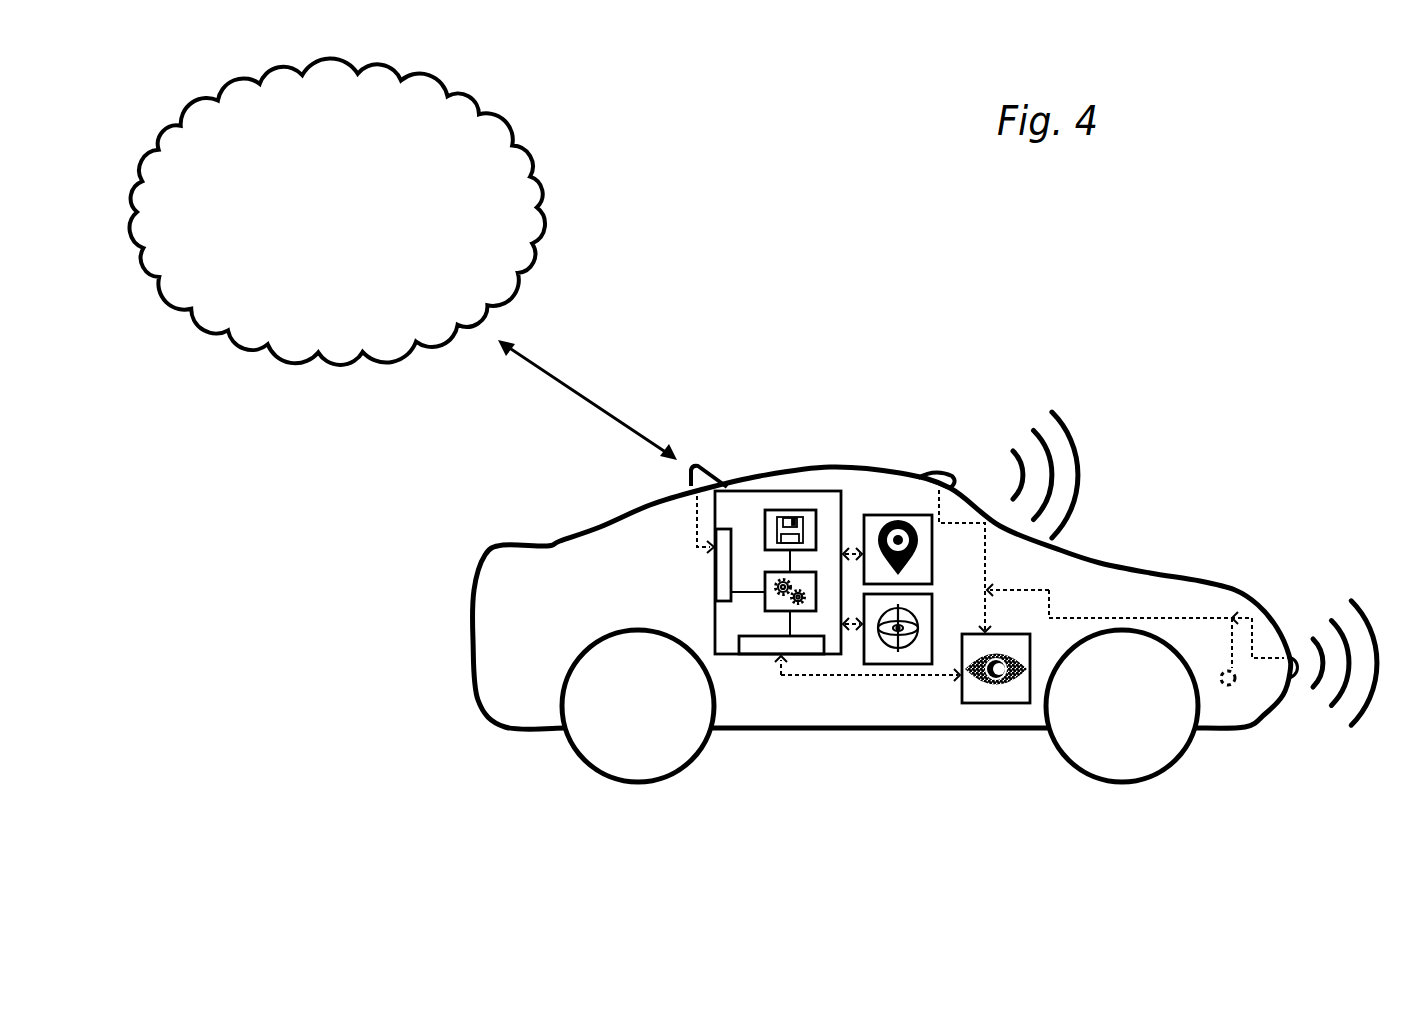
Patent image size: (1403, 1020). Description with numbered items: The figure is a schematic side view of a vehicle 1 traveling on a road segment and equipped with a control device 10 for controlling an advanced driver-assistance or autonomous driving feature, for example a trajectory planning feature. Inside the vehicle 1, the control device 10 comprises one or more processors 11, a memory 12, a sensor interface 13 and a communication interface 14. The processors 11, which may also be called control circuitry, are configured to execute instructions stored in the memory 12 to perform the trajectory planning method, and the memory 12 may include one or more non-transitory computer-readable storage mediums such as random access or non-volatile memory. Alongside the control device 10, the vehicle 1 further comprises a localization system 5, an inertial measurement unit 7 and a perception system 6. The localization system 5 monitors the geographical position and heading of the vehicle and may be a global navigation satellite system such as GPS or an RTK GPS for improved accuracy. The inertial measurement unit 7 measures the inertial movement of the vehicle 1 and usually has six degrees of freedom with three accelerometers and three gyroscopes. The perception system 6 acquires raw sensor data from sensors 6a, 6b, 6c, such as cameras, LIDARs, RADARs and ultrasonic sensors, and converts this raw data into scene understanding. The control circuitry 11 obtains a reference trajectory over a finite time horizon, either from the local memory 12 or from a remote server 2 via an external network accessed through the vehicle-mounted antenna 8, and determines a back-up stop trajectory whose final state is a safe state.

The vehicle 1 is at (490, 718).
The remote server 2 is at (477, 98).
The localization system 5 is at (880, 515).
The perception system 6 is at (1010, 703).
The sensor 6a is at (1233, 688).
The sensor 6b is at (1290, 660).
The sensor 6c is at (940, 476).
The inertial measurement unit 7 is at (890, 664).
The vehicle-mounted antenna 8 is at (703, 468).
The control device 10 is at (771, 491).
The processor 11 is at (817, 596).
The memory 12 is at (790, 510).
The sensor interface 13 is at (765, 650).
The communication interface 14 is at (718, 580).